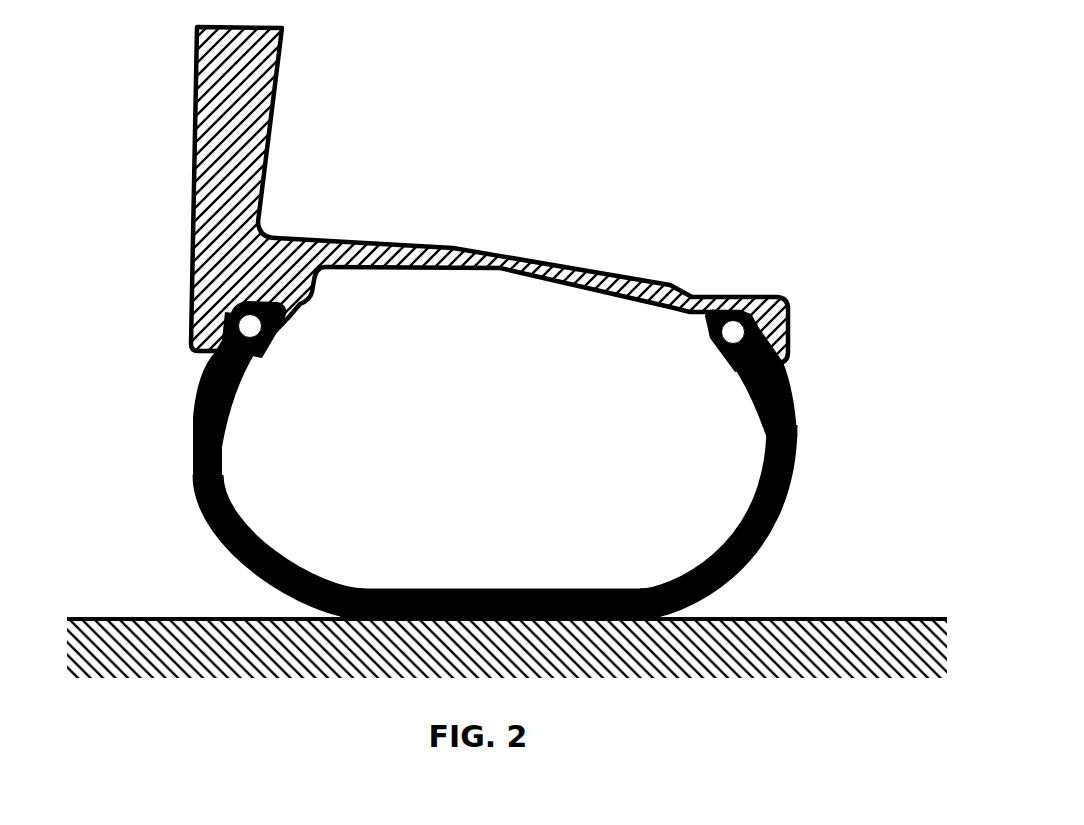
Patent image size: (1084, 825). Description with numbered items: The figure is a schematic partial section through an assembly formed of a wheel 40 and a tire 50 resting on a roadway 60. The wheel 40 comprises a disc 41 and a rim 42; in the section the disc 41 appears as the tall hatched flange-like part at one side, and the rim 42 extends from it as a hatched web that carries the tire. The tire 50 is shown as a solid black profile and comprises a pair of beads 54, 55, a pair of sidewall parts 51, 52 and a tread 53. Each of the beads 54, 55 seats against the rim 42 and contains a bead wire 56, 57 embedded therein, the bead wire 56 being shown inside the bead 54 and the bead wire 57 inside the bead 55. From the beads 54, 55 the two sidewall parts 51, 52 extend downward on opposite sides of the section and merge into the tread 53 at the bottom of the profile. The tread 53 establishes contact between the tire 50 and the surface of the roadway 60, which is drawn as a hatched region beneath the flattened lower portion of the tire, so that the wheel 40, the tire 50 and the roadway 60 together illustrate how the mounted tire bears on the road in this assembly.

The wheel 40 is at (489, 195).
The disc 41 is at (212, 145).
The rim 42 is at (456, 246).
The tire 50 is at (554, 458).
The sidewall part 51 is at (221, 440).
The sidewall part 52 is at (795, 450).
The tread 53 is at (466, 616).
The bead 54 is at (262, 311).
The bead 55 is at (727, 311).
The bead wire 56 is at (252, 327).
The bead wire 57 is at (733, 336).
The roadway 60 is at (464, 669).